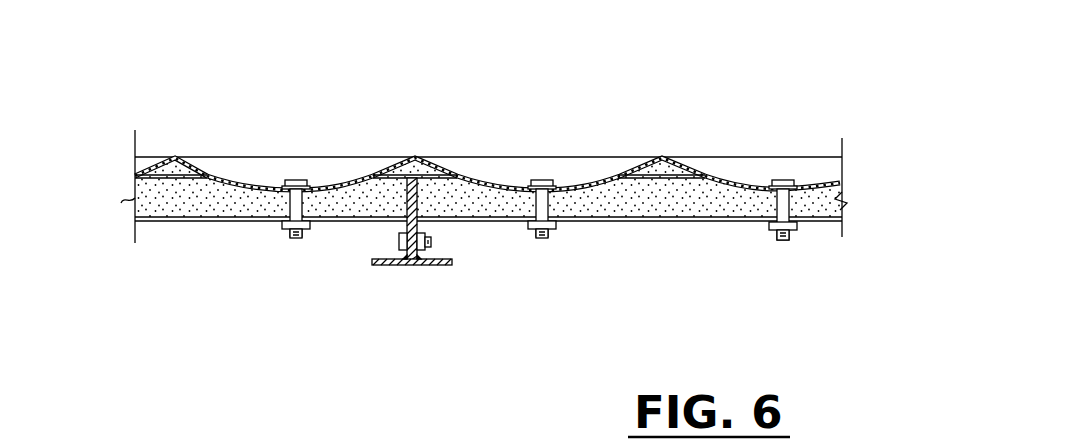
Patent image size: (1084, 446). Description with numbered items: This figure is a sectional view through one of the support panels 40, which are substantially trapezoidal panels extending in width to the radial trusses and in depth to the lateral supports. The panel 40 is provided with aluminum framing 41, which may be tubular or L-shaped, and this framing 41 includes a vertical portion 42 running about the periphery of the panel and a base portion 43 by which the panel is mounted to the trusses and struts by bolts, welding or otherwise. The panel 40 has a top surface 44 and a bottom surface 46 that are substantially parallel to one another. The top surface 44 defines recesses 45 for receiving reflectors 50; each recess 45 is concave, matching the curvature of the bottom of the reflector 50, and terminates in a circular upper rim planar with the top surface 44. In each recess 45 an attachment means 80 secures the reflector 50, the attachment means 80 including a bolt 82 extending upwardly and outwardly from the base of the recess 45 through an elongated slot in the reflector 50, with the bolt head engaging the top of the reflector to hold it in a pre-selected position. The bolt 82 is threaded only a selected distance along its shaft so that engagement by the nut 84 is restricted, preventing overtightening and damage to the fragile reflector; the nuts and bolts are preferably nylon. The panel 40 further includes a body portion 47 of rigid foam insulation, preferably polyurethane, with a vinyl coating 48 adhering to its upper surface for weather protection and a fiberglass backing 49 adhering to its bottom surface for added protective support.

The support panel 40 is at (823, 225).
The aluminum framing 41 is at (398, 269).
The vertical portion 42 is at (410, 207).
The base portion 43 is at (402, 268).
The top surface 44 is at (415, 174).
The recess 45 is at (243, 190).
The bottom surface 46 is at (688, 224).
The body portion 47 is at (663, 202).
The vinyl coating 48 is at (174, 170).
The fiberglass backing 49 is at (263, 224).
The reflector 50 is at (822, 180).
The attachment means 80 is at (561, 236).
The bolt 82 is at (778, 205).
The nut 84 is at (527, 224).